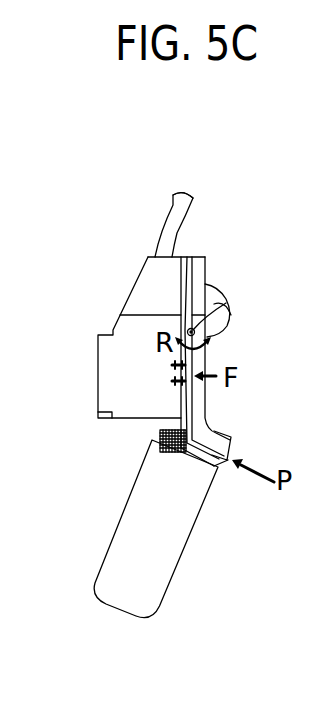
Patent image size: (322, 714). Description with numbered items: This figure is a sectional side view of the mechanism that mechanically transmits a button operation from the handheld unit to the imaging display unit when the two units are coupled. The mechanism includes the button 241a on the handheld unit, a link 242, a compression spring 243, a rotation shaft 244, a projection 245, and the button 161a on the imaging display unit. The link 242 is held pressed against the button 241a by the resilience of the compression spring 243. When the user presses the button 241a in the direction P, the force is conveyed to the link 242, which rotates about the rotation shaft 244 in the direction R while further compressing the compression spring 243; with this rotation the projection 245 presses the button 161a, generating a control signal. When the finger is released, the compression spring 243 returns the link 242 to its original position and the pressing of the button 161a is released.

The button 161a is at (177, 380).
The button 241a is at (218, 466).
The link 242 is at (214, 438).
The compression spring 243 is at (160, 438).
The rotation shaft 244 is at (222, 316).
The projection 245 is at (186, 378).